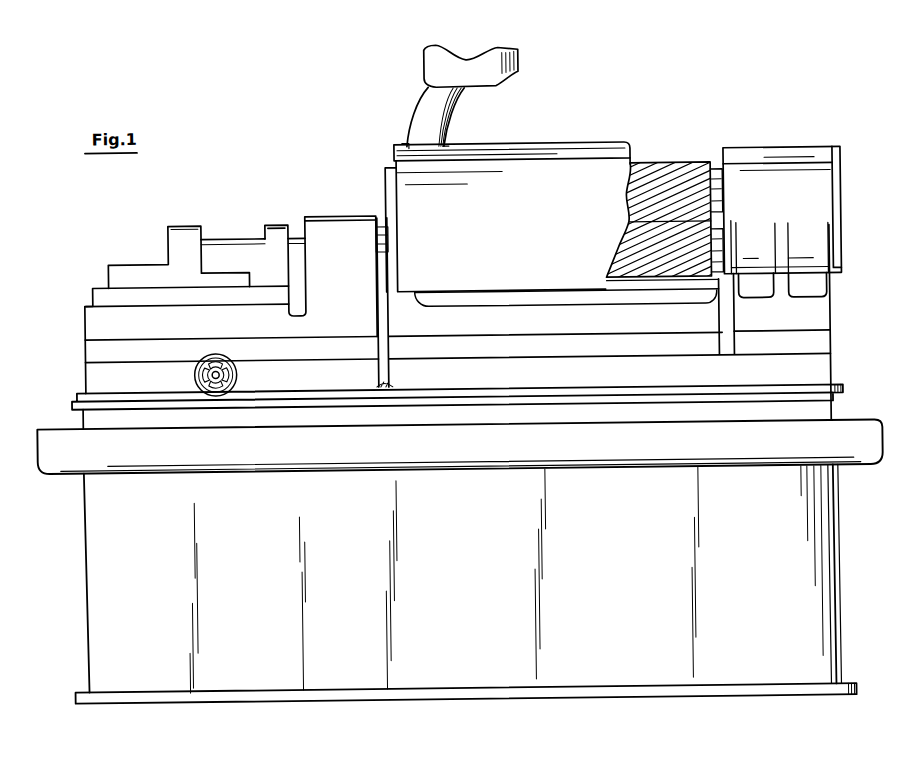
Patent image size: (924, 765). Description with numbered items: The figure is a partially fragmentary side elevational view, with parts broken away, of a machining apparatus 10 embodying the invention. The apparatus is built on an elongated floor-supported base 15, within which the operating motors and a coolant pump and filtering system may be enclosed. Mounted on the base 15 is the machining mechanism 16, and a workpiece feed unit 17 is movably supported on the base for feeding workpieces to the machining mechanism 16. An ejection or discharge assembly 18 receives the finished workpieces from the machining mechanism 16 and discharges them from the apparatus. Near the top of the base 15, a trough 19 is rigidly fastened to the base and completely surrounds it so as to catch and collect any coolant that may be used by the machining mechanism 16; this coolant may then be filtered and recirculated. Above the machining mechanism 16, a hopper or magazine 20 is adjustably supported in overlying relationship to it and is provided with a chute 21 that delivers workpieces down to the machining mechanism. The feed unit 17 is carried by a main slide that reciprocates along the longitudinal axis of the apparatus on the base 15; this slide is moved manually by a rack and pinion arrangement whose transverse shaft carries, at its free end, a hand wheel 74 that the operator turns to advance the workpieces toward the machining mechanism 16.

The machine body 10 is at (100, 319).
The base 15 is at (801, 623).
The machining mechanism 16 is at (571, 176).
The workpiece feed unit 17 is at (142, 260).
The ejection or discharge assembly 18 is at (789, 182).
The trough 19 is at (871, 437).
The hopper or magazine 20 is at (513, 72).
The chute 21 is at (449, 127).
The hand wheel 74 is at (228, 392).